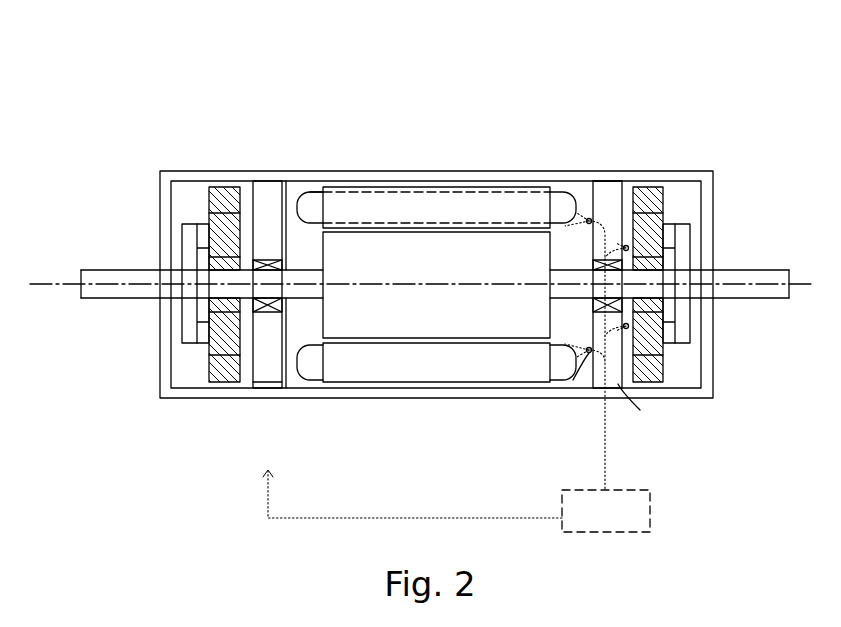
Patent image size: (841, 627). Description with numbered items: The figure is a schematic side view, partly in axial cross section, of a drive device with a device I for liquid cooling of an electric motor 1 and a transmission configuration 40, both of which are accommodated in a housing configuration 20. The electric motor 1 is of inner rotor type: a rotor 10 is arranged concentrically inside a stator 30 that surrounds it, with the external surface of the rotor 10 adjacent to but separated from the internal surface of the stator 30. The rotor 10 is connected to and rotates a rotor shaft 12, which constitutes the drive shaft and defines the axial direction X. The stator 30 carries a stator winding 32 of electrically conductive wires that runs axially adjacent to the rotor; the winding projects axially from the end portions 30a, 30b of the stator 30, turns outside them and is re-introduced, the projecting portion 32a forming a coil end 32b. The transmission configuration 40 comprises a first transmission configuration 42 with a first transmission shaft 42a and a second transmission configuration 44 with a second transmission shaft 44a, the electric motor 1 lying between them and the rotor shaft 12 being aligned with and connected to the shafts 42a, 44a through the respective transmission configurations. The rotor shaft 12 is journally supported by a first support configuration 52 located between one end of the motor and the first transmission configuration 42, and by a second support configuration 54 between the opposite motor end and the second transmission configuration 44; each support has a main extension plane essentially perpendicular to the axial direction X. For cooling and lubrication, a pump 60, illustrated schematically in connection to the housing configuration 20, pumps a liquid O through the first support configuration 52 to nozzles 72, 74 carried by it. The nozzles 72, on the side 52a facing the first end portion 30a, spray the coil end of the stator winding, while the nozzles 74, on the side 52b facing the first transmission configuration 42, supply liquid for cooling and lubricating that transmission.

The electric motor 1 is at (633, 66).
The rotor 10 is at (465, 251).
The rotor shaft 12 is at (297, 266).
The housing configuration 20 is at (159, 373).
The stator 30 is at (387, 198).
The first end portion of the stator 30a is at (576, 203).
The second end portion of the stator 30b is at (313, 193).
The stator winding 32 is at (437, 193).
The projecting portion of the stator winding 32a is at (620, 200).
The coil end 32b is at (300, 196).
The transmission configuration 40 is at (207, 184).
The first transmission configuration 42 is at (668, 210).
The first transmission shaft 42a is at (765, 299).
The second transmission configuration 44 is at (203, 205).
The second transmission shaft 44a is at (130, 299).
The first support configuration 52 is at (615, 203).
The side of the first support configuration facing the first end portion 52a is at (573, 380).
The side of the first support configuration facing the first transmission configurat 52b is at (640, 410).
The second support configuration 54 is at (249, 380).
The pump 60 is at (594, 518).
The nozzles for cooling the first end portion 72 is at (592, 219).
The nozzles for cooling and lubricating the first transmission configuration 74 is at (629, 249).
The axial direction X is at (65, 290).
The liquid O is at (340, 518).